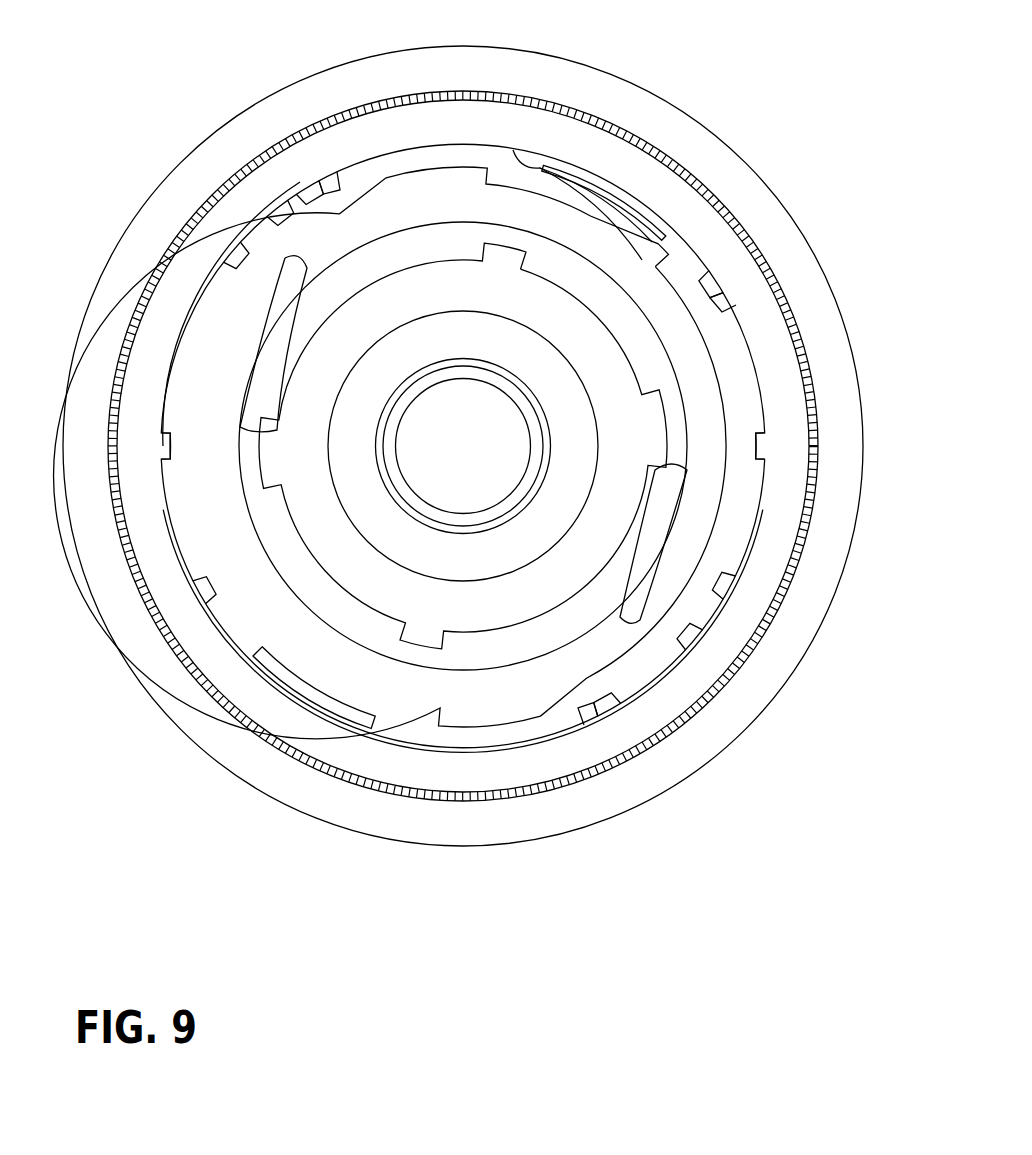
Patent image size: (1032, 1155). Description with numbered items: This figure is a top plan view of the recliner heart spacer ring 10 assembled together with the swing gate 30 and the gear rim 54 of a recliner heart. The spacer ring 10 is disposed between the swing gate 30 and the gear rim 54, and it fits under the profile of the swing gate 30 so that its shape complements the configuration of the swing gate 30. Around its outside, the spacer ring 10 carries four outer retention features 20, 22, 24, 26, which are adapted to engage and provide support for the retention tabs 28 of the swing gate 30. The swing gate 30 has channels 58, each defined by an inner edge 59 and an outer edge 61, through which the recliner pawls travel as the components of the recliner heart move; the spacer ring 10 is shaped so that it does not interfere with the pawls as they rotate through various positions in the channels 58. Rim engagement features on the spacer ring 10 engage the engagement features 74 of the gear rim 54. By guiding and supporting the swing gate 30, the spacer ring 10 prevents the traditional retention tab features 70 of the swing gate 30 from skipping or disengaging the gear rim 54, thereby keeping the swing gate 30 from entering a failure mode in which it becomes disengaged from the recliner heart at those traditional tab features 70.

The recliner heart spacer ring 10 is at (212, 393).
The outer retention feature 20 is at (335, 180).
The outer retention feature 22 is at (710, 297).
The outer retention feature 24 is at (592, 735).
The outer retention feature 26 is at (222, 625).
The retention tab 28 is at (315, 197).
The swing gate 30 is at (280, 242).
The gear rim 54 is at (871, 298).
The channel 58 is at (607, 260).
The inner edge 59 is at (555, 245).
The outer edge 61 is at (713, 285).
The traditional retention tab feature 70 is at (163, 445).
The engagement feature 74 is at (165, 455).